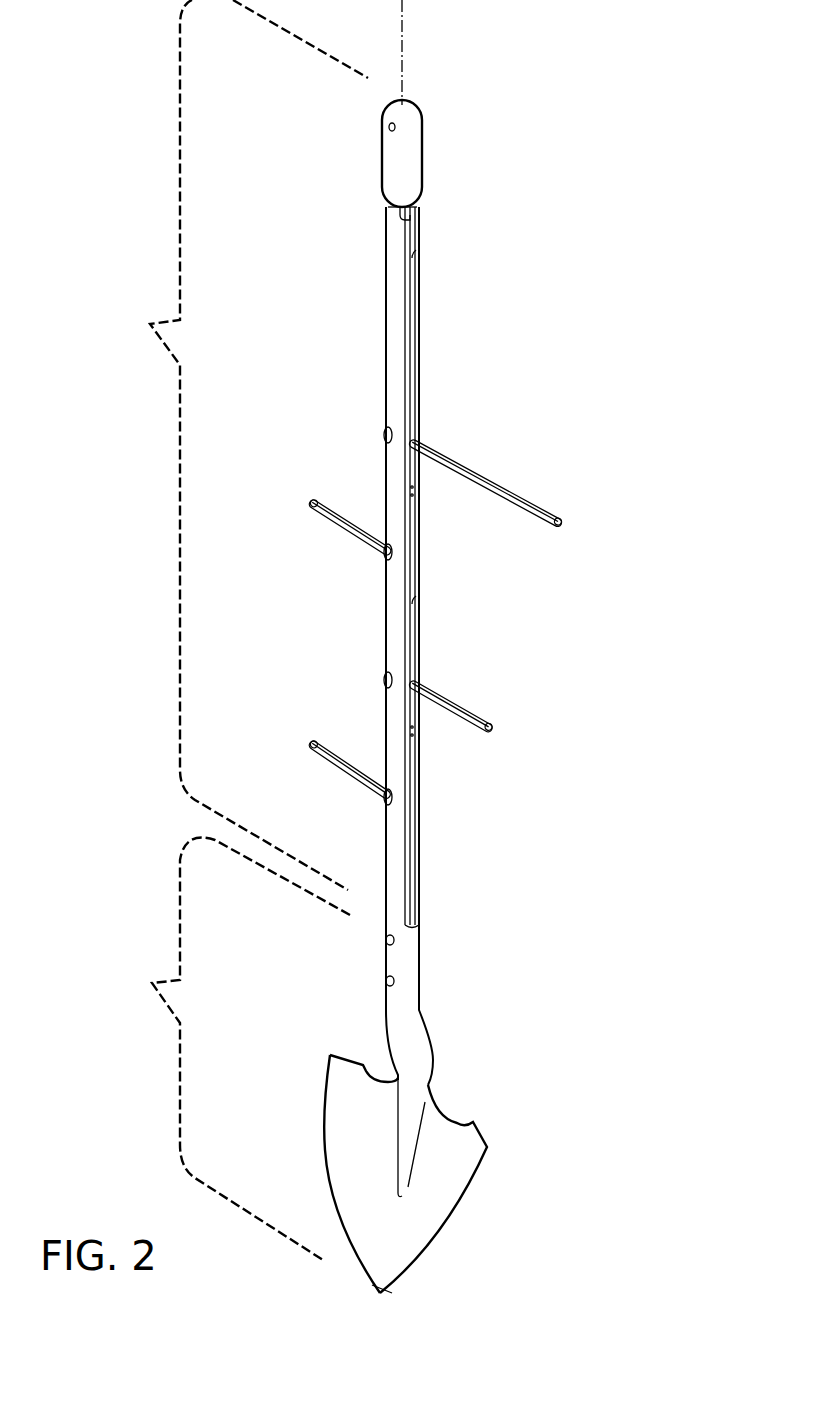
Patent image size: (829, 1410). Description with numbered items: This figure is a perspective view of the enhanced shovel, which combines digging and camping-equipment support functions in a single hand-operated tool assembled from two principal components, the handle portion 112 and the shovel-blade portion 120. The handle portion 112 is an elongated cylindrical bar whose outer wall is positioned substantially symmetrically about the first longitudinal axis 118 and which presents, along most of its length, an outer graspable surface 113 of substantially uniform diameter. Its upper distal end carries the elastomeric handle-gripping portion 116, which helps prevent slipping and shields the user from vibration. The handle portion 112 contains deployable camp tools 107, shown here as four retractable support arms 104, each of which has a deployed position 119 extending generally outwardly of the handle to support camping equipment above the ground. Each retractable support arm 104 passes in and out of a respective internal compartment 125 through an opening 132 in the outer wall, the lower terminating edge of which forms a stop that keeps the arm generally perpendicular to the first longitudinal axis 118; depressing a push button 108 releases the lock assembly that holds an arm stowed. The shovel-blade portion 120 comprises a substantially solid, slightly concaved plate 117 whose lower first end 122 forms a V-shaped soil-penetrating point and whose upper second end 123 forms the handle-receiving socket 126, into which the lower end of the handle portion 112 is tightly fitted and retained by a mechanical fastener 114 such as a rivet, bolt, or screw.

The retractable support arm 104 is at (310, 500).
The camp tool 107 is at (518, 462).
The push button 108 is at (386, 435).
The handle portion 112 is at (150, 324).
The outer graspable surface 113 is at (388, 358).
The mechanical fastener 114 is at (386, 940).
The handle-gripping portion 116 is at (413, 133).
The plate 117 is at (360, 1140).
The first longitudinal axis 118 is at (402, 24).
The deployed position 119 is at (550, 482).
The shovel-blade portion 120 is at (152, 983).
The first end 122 is at (385, 1287).
The second end 123 is at (428, 1092).
The internal compartment 125 is at (413, 342).
The handle-receiving socket 126 is at (415, 983).
The opening 132 is at (424, 279).